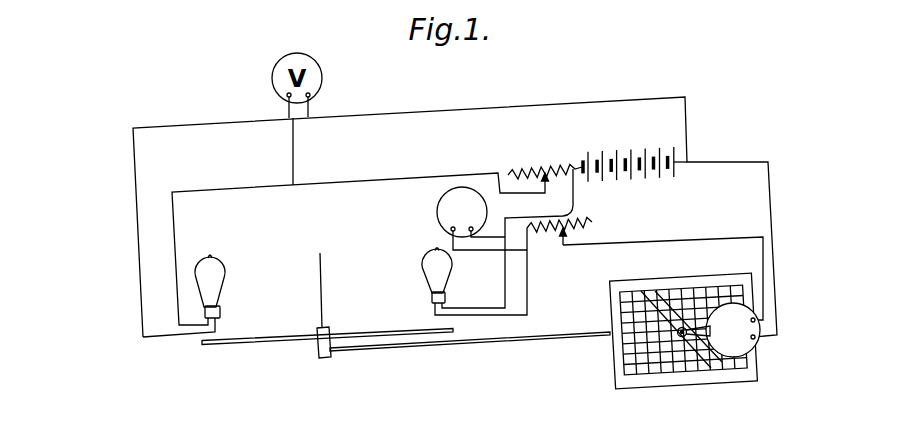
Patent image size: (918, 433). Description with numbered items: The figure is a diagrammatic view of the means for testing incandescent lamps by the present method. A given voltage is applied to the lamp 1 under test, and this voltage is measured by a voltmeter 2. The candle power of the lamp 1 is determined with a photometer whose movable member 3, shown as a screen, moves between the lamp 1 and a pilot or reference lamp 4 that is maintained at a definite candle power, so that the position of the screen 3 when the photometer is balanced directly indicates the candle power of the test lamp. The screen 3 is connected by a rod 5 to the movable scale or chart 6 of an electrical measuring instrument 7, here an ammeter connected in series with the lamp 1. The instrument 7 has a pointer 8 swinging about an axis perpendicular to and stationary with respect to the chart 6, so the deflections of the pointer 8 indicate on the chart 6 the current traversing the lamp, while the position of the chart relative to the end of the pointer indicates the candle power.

The lamp 1 is at (427, 262).
The voltmeter 2 is at (436, 213).
The movable member 3 is at (318, 348).
The reference lamp 4 is at (226, 274).
The rod 5 is at (490, 341).
The scale or chart 6 is at (757, 368).
The electrical measuring instrument 7 is at (755, 338).
The pointer 8 is at (688, 330).